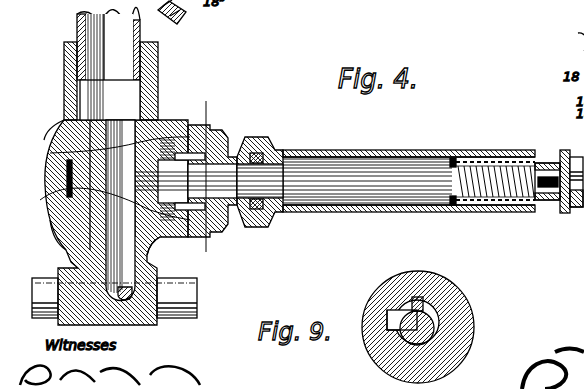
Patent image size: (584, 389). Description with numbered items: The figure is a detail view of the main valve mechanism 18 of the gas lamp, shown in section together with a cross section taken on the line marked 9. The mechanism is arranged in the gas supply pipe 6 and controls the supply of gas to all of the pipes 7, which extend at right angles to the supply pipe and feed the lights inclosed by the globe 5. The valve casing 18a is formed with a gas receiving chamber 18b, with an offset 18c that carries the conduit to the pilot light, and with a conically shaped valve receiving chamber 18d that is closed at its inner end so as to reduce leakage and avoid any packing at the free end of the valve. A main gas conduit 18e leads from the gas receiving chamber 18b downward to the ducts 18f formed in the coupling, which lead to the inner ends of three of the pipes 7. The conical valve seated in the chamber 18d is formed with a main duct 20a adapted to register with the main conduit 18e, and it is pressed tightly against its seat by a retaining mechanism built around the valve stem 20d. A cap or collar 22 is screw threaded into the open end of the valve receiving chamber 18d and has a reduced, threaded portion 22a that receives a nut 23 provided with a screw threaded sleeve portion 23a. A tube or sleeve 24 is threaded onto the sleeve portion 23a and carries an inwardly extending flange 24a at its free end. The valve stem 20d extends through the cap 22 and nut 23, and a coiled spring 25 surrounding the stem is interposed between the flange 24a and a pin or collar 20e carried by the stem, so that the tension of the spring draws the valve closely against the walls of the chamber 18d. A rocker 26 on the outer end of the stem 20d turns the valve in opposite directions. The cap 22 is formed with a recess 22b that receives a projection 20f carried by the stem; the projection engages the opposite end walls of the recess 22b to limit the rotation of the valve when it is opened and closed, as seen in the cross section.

In FIG. 4, the globe 5 is at (34, 299).
In FIG. 4, the gas supply pipe 6 is at (175, 24).
In FIG. 4, the pipes 7 is at (55, 313).
In FIG. 4, the section line 9- 9 is at (204, 176).
In FIG. 4, the main valve mechanism 18 is at (188, 122).
In FIG. 4, the valve casing 18a is at (58, 138).
In FIG. 4, the gas receiving chamber 18b is at (92, 105).
In FIG. 4, the offset 18c is at (50, 153).
In FIG. 4, the valve receiving chamber 18d is at (83, 200).
In FIG. 4, the main gas conduit 18e is at (152, 245).
In FIG. 4, the ducts 18f is at (129, 300).
In FIG. 4, the main duct 20a is at (118, 128).
In FIG. 9, the main duct 20a is at (434, 328).
In FIG. 4, the valve stem 20d is at (399, 176).
In FIG. 4, the pin or collar 20e is at (451, 212).
In FIG. 9, the projection 20f is at (430, 294).
In FIG. 4, the cap or collar 22 is at (221, 138).
In FIG. 9, the cap or collar 22 is at (453, 357).
In FIG. 4, the reduced portion 22a is at (260, 157).
In FIG. 4, the recess 22b is at (189, 153).
In FIG. 9, the recess 22b is at (400, 310).
In FIG. 4, the nut 23 is at (258, 222).
In FIG. 4, the sleeve portion 23a is at (315, 150).
In FIG. 4, the tube or sleeve 24 is at (386, 213).
In FIG. 4, the flange 24a is at (535, 213).
In FIG. 4, the coiled spring 25 is at (470, 213).
In FIG. 4, the rocker 26 is at (560, 150).